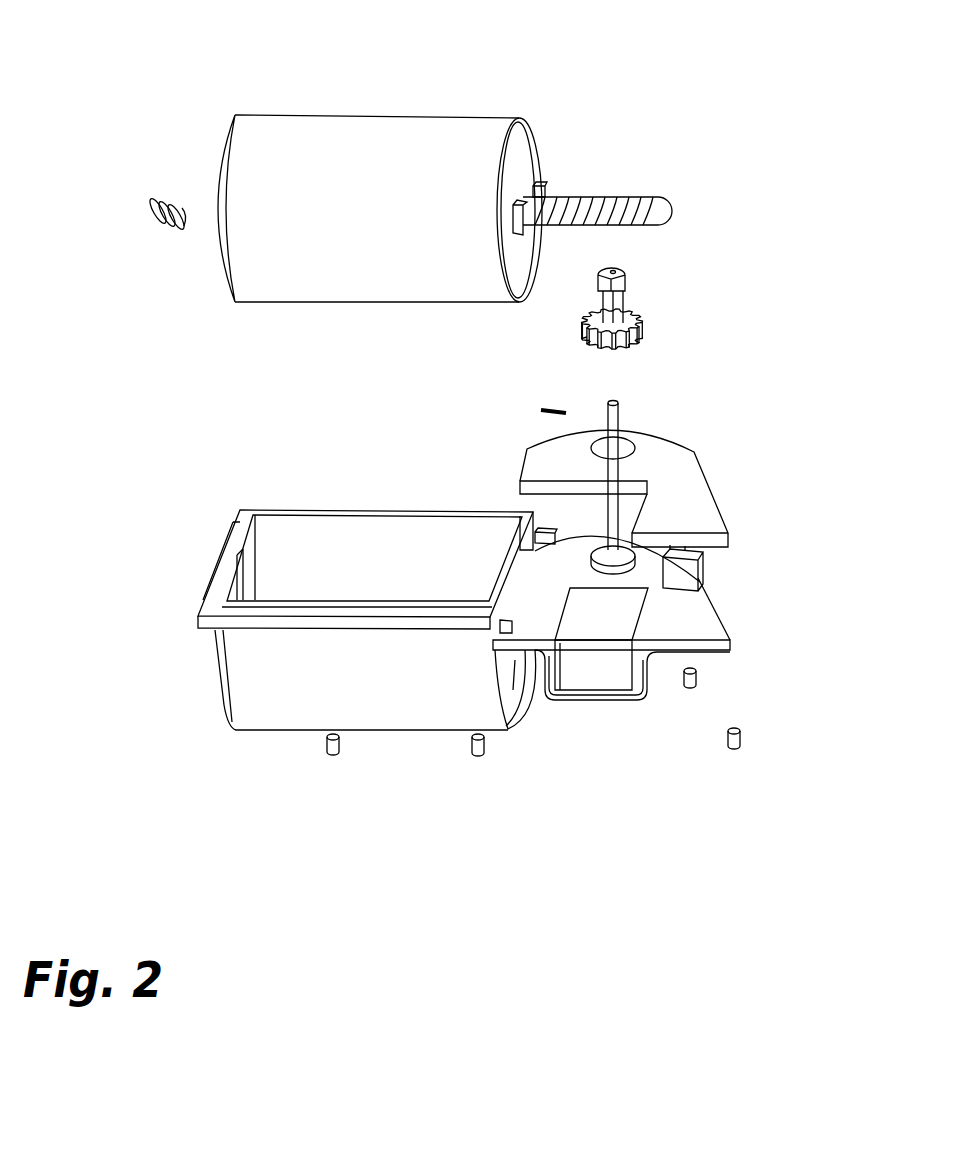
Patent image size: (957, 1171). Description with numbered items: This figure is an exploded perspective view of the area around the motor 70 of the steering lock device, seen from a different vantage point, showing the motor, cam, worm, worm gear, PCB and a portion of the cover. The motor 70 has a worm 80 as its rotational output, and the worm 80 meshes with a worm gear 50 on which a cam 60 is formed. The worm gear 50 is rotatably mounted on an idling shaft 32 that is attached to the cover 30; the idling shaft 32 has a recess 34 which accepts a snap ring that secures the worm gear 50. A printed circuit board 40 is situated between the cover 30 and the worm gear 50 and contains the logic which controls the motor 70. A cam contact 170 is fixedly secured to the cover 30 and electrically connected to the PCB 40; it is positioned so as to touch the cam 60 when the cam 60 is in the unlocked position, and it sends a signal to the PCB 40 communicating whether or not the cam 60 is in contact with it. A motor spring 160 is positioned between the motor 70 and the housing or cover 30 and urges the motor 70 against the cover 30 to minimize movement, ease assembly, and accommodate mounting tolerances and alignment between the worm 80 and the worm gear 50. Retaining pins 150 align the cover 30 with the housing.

The cover 30 is at (220, 703).
The idling shaft 32 is at (608, 521).
The recess 34 is at (620, 406).
The printed circuit board (PCB) 40 is at (714, 497).
The worm gear 50 is at (644, 330).
The cam 60 is at (621, 272).
The motor 70 is at (383, 128).
The worm 80 is at (620, 196).
The retaining pins 150 is at (340, 750).
The motor spring 160 is at (158, 205).
The cam contact 170 is at (539, 411).